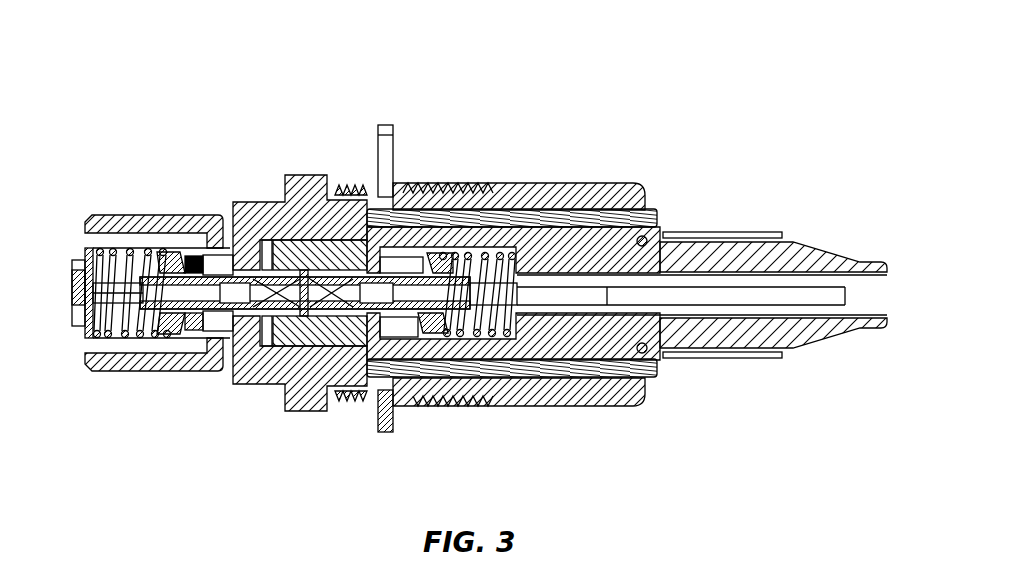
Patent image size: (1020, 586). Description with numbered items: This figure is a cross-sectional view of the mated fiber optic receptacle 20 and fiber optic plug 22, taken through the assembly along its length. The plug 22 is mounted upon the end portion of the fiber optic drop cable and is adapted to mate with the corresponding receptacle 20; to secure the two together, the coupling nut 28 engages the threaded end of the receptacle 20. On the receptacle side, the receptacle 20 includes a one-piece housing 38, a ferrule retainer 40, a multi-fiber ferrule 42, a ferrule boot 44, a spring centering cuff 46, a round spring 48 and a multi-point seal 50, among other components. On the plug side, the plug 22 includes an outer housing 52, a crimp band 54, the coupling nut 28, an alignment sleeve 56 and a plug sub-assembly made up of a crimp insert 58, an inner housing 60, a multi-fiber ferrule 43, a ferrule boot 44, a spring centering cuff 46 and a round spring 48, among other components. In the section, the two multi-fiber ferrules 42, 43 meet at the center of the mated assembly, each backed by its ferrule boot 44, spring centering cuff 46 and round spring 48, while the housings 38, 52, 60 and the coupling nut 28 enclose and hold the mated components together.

The fiber optic receptacle 20 is at (261, 166).
The fiber optic plug 22 is at (693, 170).
The coupling nut 28 is at (523, 183).
The one-piece housing 38 is at (293, 175).
The ferrule retainer 40 is at (110, 217).
The multi-fiber ferrule 42 is at (250, 278).
The multi-fiber ferrule 43 is at (447, 257).
The ferrule boot 44 is at (162, 338).
The spring centering cuff 46 is at (170, 330).
The round spring 48 is at (113, 343).
The multi-point seal 50 is at (345, 182).
The outer housing 52 is at (543, 213).
The crimp band 54 is at (743, 232).
The alignment sleeve 56 is at (368, 205).
The crimp insert 58 is at (823, 257).
The inner housing 60 is at (410, 257).